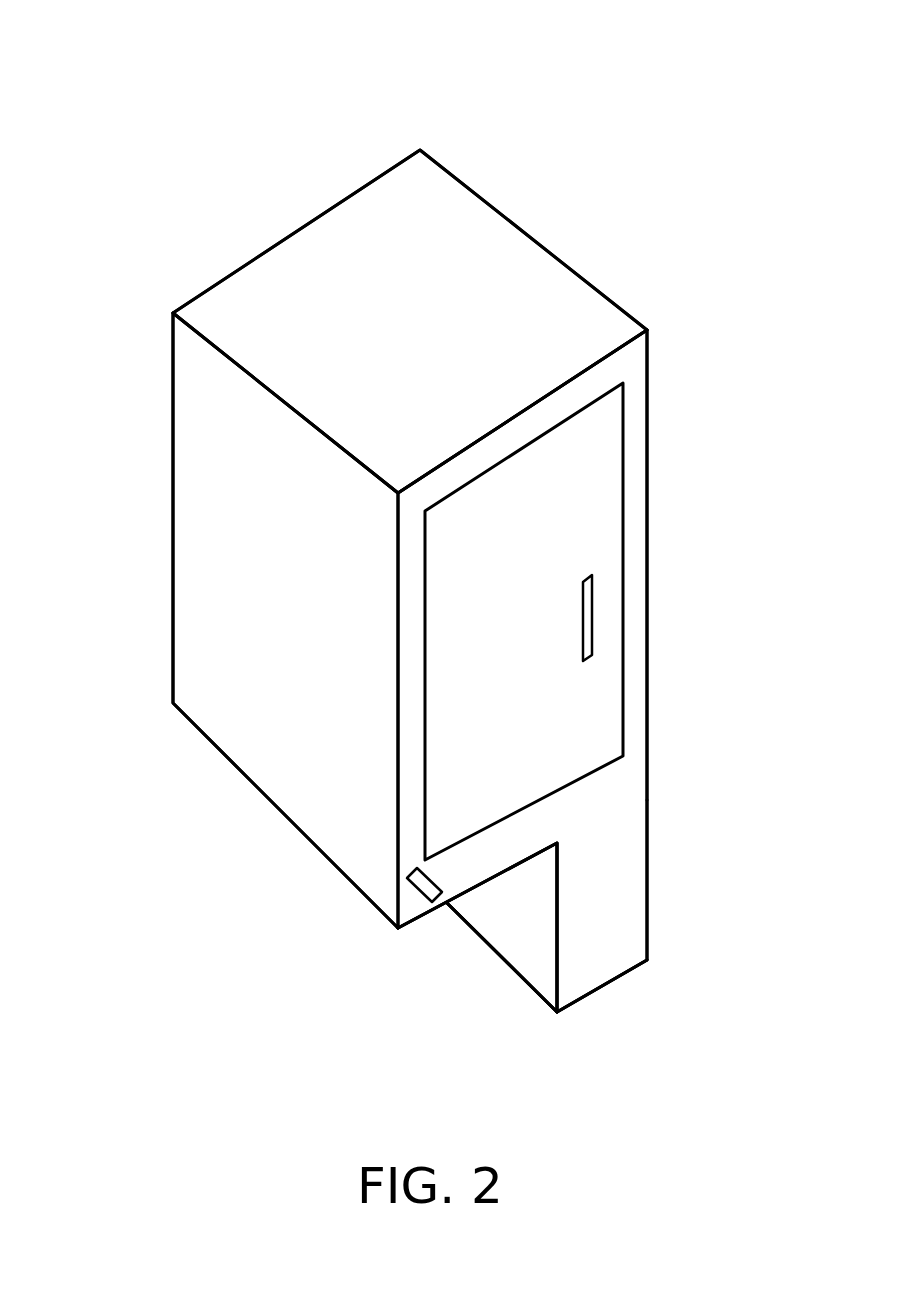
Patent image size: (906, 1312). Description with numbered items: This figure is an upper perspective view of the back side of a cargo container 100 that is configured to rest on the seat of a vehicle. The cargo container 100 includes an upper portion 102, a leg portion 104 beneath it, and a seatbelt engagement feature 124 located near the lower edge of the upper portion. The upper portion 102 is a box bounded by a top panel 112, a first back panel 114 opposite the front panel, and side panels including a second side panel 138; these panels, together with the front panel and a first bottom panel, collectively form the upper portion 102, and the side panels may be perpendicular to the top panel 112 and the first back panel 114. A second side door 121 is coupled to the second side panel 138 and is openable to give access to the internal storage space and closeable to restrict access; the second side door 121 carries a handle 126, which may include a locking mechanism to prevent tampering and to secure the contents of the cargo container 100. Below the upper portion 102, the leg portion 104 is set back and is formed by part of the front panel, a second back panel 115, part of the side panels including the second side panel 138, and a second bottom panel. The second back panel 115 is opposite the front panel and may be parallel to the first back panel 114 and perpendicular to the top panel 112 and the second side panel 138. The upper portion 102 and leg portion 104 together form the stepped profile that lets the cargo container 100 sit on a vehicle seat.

The cargo container 100 is at (124, 68).
The upper portion 102 is at (667, 800).
The leg portion 104 is at (667, 802).
The top panel 112 is at (327, 230).
The first back panel 114 is at (188, 520).
The second back panel 115 is at (537, 983).
The second side door 121 is at (610, 400).
The seatbelt engagement feature 124 is at (423, 887).
The handle 126 is at (587, 627).
The second side panel 138 is at (617, 972).